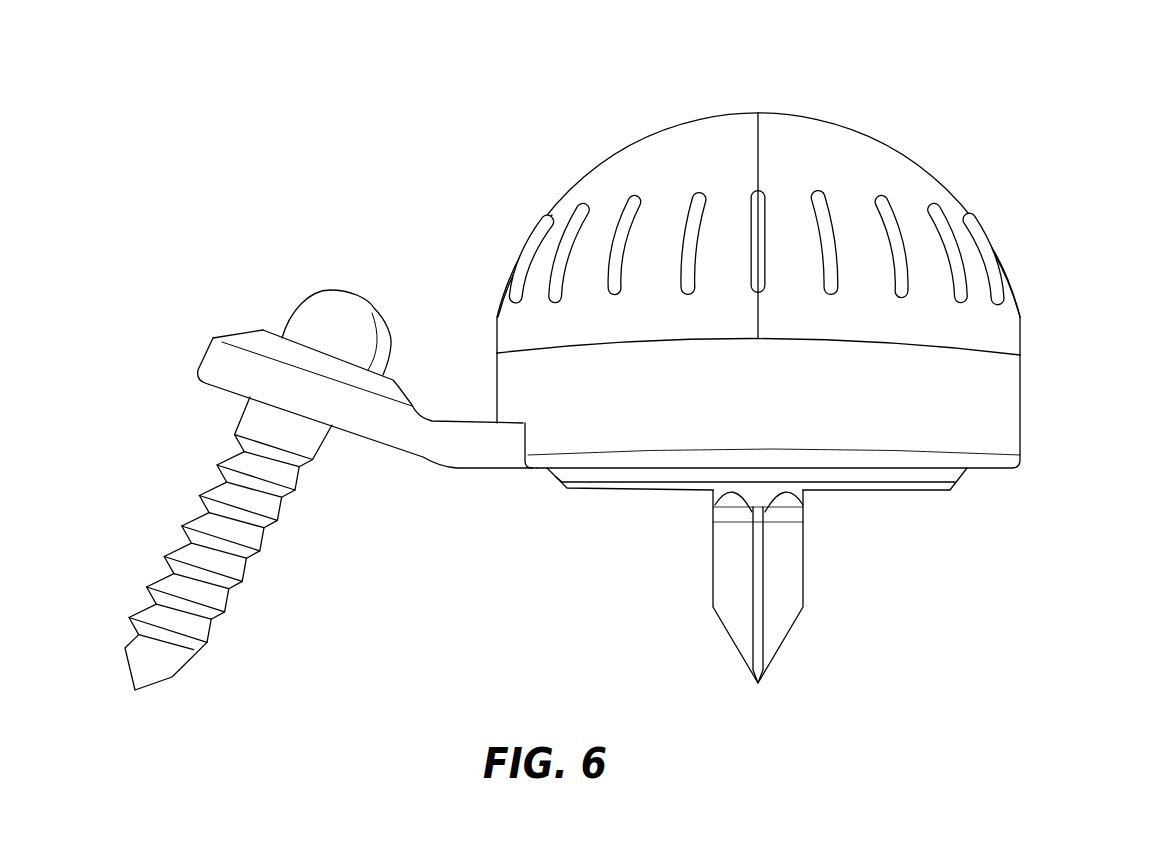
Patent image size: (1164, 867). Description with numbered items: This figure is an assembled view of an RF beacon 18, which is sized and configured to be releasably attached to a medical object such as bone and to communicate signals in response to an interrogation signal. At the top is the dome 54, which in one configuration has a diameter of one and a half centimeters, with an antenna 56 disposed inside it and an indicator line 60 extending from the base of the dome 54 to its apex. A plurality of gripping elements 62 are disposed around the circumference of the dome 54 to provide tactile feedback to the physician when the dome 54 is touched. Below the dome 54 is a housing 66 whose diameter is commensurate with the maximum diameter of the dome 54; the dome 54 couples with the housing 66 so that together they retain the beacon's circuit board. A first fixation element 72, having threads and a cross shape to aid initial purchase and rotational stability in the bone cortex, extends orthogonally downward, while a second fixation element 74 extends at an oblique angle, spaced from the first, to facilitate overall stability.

The RF beacon 18 is at (1000, 195).
The dome 54 is at (930, 174).
The antenna 56 is at (760, 112).
The indicator line 60 is at (760, 147).
The gripping elements 62 is at (878, 193).
The housing 66 is at (1020, 400).
The first fixation element 72 is at (803, 568).
The second fixation element 74 is at (253, 557).